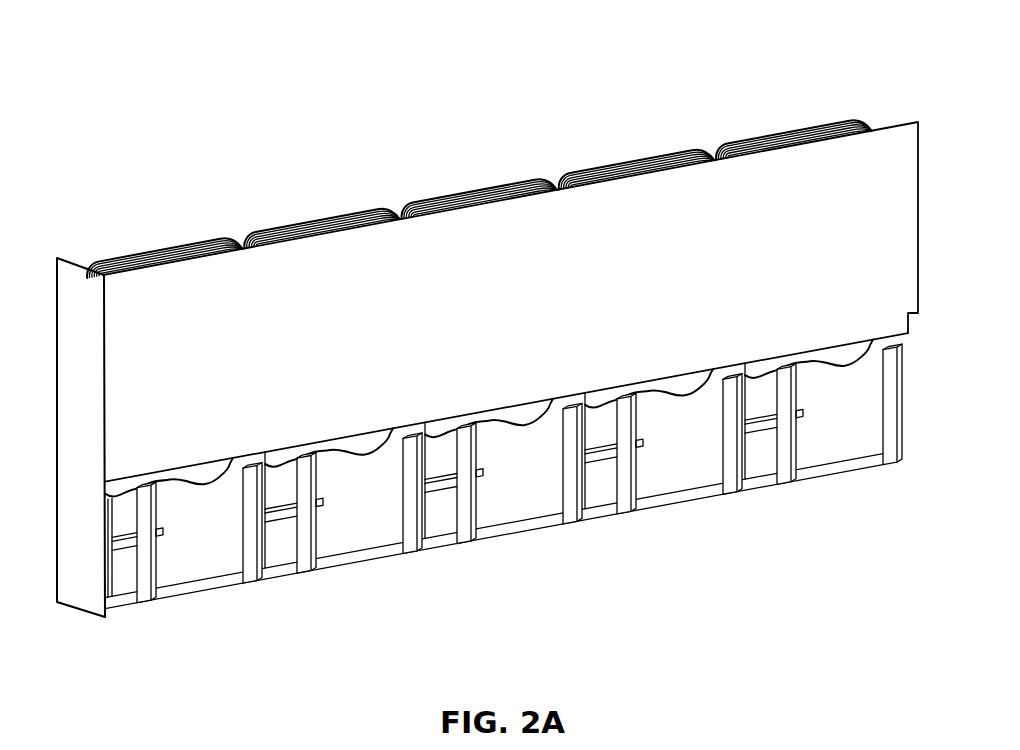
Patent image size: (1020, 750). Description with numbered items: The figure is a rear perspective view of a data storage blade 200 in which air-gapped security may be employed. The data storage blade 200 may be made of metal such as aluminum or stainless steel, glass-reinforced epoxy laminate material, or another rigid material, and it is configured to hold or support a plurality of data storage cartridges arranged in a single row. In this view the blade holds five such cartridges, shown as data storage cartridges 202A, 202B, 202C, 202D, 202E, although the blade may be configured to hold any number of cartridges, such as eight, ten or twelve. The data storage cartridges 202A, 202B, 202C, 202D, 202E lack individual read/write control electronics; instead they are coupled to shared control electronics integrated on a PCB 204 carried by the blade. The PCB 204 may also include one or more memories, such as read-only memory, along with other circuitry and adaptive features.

The data storage blade 200 is at (128, 86).
The data storage cartridge 202A is at (203, 257).
The data storage cartridge 202B is at (365, 208).
The data storage cartridge 202C is at (522, 180).
The data storage cartridge 202D is at (673, 152).
The data storage cartridge 202E is at (840, 122).
The PCB 204 is at (843, 448).